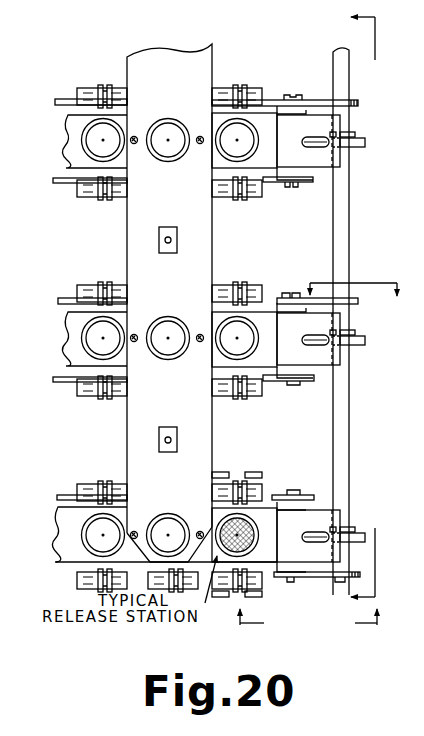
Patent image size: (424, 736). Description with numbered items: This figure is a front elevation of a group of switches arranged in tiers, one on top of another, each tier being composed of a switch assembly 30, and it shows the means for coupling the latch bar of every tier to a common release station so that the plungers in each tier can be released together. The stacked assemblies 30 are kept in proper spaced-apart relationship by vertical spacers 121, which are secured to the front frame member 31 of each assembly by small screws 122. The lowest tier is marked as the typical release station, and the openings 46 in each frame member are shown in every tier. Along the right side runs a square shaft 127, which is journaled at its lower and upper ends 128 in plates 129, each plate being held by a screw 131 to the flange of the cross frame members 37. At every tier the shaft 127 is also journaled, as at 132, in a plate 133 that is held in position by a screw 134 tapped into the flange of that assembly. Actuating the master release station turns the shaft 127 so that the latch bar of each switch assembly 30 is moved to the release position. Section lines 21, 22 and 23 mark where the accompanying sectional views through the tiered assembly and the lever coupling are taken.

The section line 21- 21 is at (356, 279).
The section line 22- 22 is at (377, 310).
The section line 23- 23 is at (309, 633).
The switch assembly 30 is at (276, 71).
The front frame member 31 is at (72, 153).
The cross frame member 37 is at (63, 295).
The cylindrical opening / cup 46 is at (95, 138).
The vertical spacer 121 is at (134, 243).
The small screw 122 is at (135, 137).
The square shaft 127 is at (345, 273).
The lower and upper ends of the square shaft 128 is at (338, 582).
The plate 129 is at (300, 100).
The screw 131 is at (287, 96).
The journal 132 is at (352, 100).
The plate 133 is at (282, 297).
The screw 134 is at (295, 297).